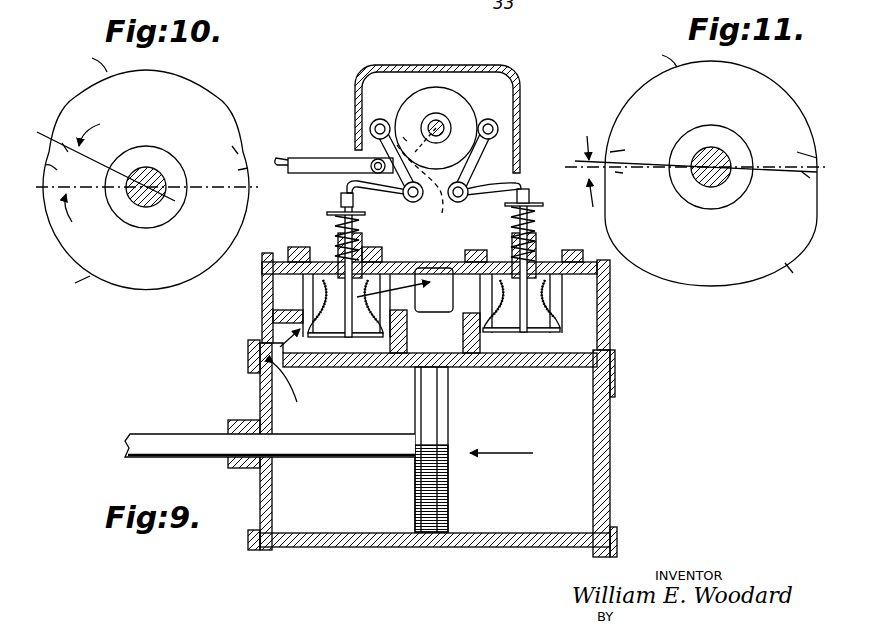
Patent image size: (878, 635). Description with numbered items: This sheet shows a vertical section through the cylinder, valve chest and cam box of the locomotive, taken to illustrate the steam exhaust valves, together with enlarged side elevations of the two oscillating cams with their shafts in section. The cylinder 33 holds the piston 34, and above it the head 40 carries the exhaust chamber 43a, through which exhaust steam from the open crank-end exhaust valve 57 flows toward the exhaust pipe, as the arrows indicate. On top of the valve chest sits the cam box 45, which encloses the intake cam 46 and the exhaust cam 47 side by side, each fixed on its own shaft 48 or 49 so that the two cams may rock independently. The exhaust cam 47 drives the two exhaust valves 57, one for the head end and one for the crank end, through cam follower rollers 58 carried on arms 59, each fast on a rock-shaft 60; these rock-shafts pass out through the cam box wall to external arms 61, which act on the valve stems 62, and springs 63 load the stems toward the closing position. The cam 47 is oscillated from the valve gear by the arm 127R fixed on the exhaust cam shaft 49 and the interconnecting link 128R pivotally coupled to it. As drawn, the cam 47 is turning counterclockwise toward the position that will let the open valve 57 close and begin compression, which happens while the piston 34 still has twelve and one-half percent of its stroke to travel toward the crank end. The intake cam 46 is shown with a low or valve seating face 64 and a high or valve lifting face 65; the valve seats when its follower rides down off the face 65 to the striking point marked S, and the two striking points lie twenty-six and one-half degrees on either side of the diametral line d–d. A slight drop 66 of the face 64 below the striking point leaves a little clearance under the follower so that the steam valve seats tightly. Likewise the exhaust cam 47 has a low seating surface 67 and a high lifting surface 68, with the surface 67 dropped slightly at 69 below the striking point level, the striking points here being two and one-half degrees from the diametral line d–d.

In FIG. 9, the cylinder 33 is at (515, 548).
In FIG. 9, the piston 34 is at (413, 505).
In FIG. 9, the cylinder head 40 is at (262, 316).
In FIG. 9, the exhaust chamber 43a is at (405, 303).
In FIG. 9, the cam box 45 is at (355, 85).
In FIG. 9, the exhaust cam 47 is at (424, 112).
In FIG. 11, the exhaust cam 47 is at (695, 189).
In FIG. 9, the exhaust cam shaft 49 is at (443, 121).
In FIG. 11, the exhaust cam shaft 49 is at (703, 183).
In FIG. 9, the exhaust valve 57 is at (312, 338).
In FIG. 9, the cam follower roller 58 is at (370, 128).
In FIG. 9, the arm 59 is at (385, 158).
In FIG. 9, the rock-shaft 60 is at (408, 199).
In FIG. 9, the external arm 61 is at (347, 186).
In FIG. 9, the valve stem 62 is at (333, 222).
In FIG. 9, the spring 63 is at (336, 240).
In FIG. 9, the arm 127R is at (429, 187).
In FIG. 9, the interconnecting link 128R is at (332, 153).
In FIG. 10, the intake cam 46 is at (144, 196).
In FIG. 10, the intake cam shaft 48 is at (163, 199).
In FIG. 10, the low valve seating face 64 is at (69, 285).
In FIG. 10, the high valve lifting face 65 is at (86, 61).
In FIG. 10, the drop of seating surface 66 is at (146, 171).
In FIG. 11, the low seating surface 67 is at (658, 54).
In FIG. 11, the high valve lifting surface 68 is at (799, 277).
In FIG. 11, the drop of seating surface 69 is at (713, 147).